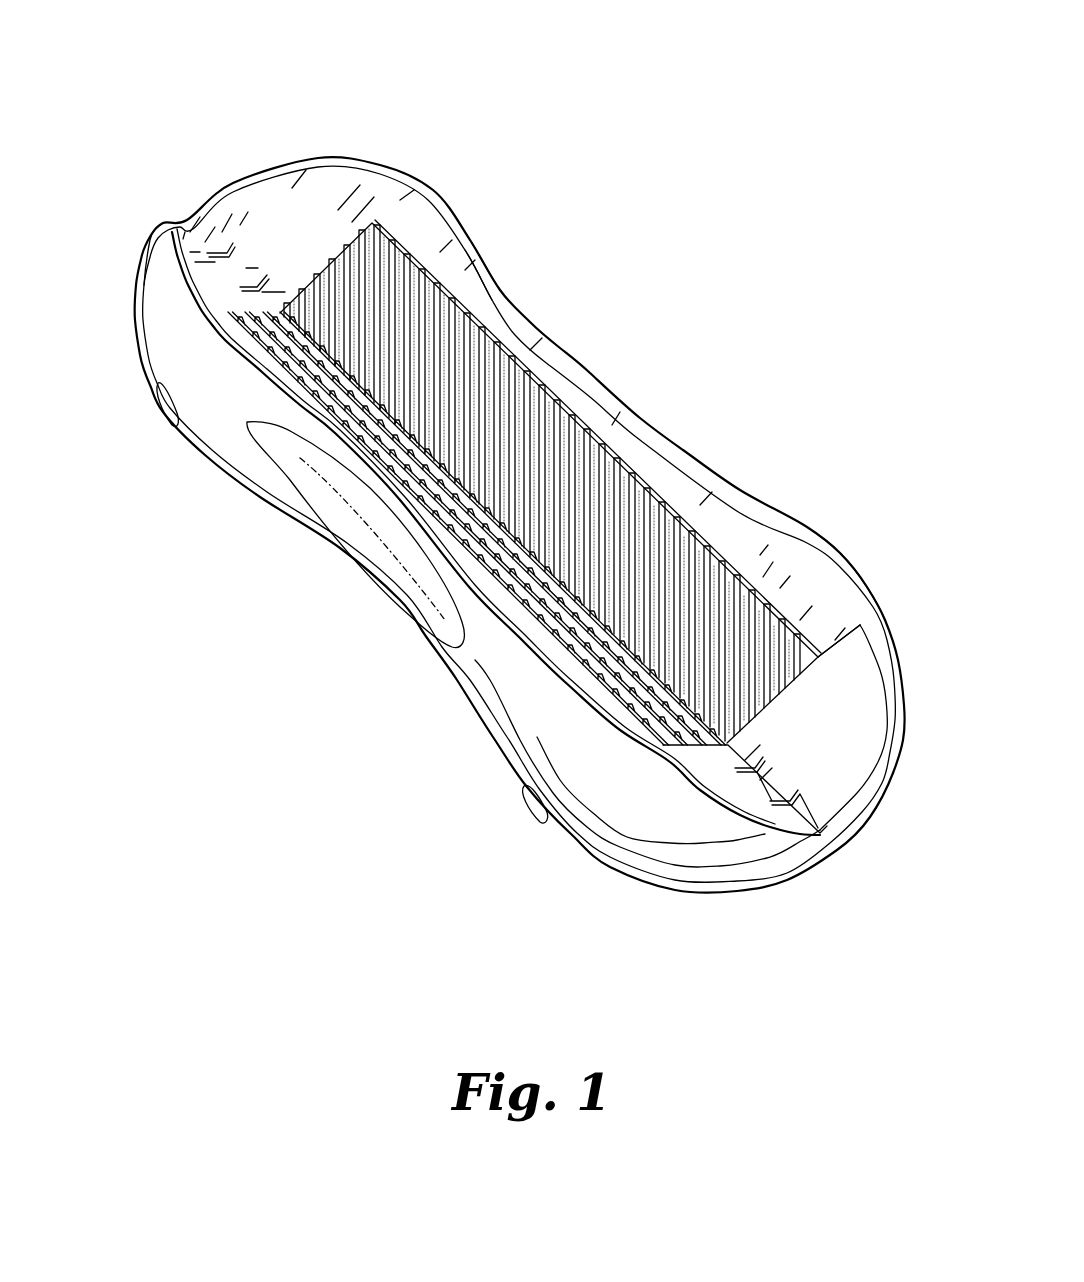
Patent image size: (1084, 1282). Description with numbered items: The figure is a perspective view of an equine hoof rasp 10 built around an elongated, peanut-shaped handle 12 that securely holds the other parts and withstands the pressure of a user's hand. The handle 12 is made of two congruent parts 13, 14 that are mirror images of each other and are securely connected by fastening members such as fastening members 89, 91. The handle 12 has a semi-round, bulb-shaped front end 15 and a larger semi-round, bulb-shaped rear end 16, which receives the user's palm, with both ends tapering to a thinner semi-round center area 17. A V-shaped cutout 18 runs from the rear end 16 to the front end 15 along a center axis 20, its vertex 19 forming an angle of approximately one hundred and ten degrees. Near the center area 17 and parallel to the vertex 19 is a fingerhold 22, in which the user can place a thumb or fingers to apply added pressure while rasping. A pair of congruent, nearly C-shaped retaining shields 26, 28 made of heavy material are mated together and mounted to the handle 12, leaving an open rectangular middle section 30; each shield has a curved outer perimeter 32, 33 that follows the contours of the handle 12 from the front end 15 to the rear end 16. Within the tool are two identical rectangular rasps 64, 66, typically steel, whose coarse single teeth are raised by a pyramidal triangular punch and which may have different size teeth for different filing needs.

The equine hoof rasp 10 is at (718, 110).
The peanut-shaped handle 12 is at (207, 566).
The congruent part 13 is at (567, 837).
The congruent part 14 is at (835, 545).
The front end 15 is at (136, 233).
The rear end 16 is at (827, 877).
The center area 17 is at (341, 572).
The V-shaped cutout 18 is at (195, 190).
The vertex 19 is at (827, 803).
The center axis 20 is at (427, 447).
The fingerhold 22 is at (347, 520).
The retaining shield 26 is at (760, 808).
The retaining shield 28 is at (850, 620).
The open rectangular middle section 30 is at (372, 223).
The outer perimeter 32 is at (533, 347).
The outer perimeter 33 is at (178, 277).
The rasp 64 is at (243, 340).
The rasp 66 is at (423, 287).
The fastening member 89 is at (530, 807).
The fastening member 91 is at (170, 410).